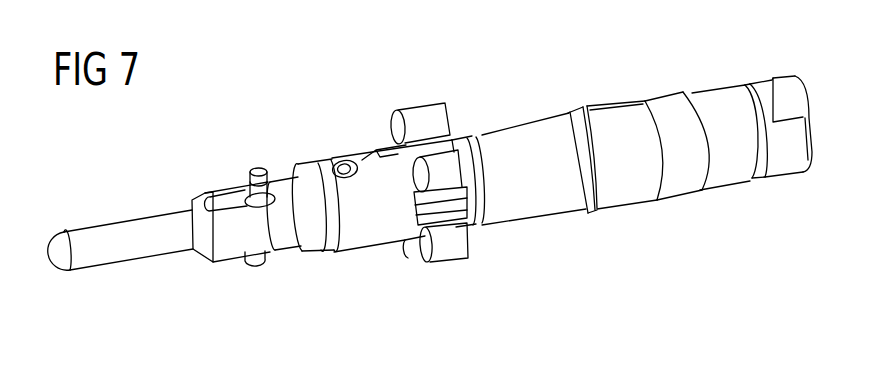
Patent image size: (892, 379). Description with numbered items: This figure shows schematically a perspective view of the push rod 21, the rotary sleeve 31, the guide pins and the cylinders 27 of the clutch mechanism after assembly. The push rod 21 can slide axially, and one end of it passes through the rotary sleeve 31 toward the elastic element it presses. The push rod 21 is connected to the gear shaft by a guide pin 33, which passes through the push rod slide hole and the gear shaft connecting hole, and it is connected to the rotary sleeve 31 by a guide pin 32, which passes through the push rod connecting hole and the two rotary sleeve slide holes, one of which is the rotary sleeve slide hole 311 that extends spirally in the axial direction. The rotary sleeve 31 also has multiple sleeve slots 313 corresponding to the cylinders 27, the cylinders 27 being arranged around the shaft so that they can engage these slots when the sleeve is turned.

The push rod 21 is at (113, 237).
The guide pin 33 is at (259, 168).
The rotary sleeve 31 is at (371, 225).
The guide pin 32 is at (341, 157).
The rotary sleeve slide hole 311 is at (363, 152).
The cylinders 27 is at (452, 247).
The sleeve slots 313 is at (493, 220).